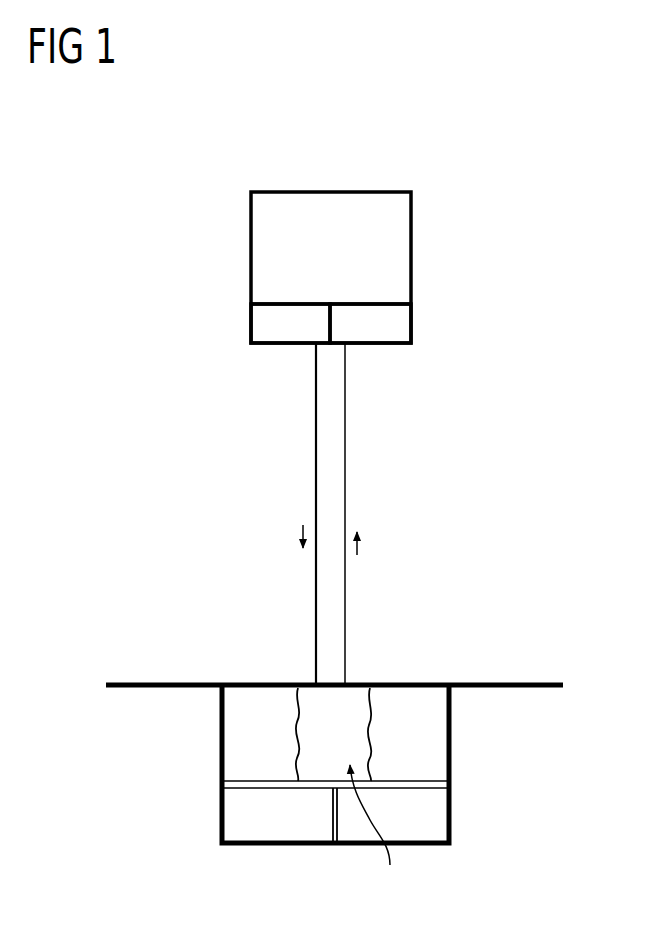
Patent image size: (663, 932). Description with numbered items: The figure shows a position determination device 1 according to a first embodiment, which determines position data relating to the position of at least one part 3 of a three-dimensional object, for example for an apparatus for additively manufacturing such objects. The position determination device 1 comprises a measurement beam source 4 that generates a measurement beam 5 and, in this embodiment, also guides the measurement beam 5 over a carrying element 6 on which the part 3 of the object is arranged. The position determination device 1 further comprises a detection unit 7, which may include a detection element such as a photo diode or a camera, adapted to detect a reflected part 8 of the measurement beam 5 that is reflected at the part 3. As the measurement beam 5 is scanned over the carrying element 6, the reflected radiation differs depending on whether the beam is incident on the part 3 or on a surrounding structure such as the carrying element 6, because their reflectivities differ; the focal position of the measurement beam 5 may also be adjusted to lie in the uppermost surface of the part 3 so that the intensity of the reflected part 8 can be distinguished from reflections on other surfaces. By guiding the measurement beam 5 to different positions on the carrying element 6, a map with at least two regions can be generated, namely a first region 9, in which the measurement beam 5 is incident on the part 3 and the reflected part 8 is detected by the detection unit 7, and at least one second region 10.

The position determination device 1 is at (458, 157).
The part 3 is at (356, 692).
The measurement beam source 4 is at (262, 323).
The measurement beam 5 is at (316, 403).
The carrying element 6 is at (252, 785).
The detection unit 7 is at (398, 323).
The reflected part 8 is at (345, 433).
The first region 9 is at (305, 670).
The second region 10 is at (240, 662).